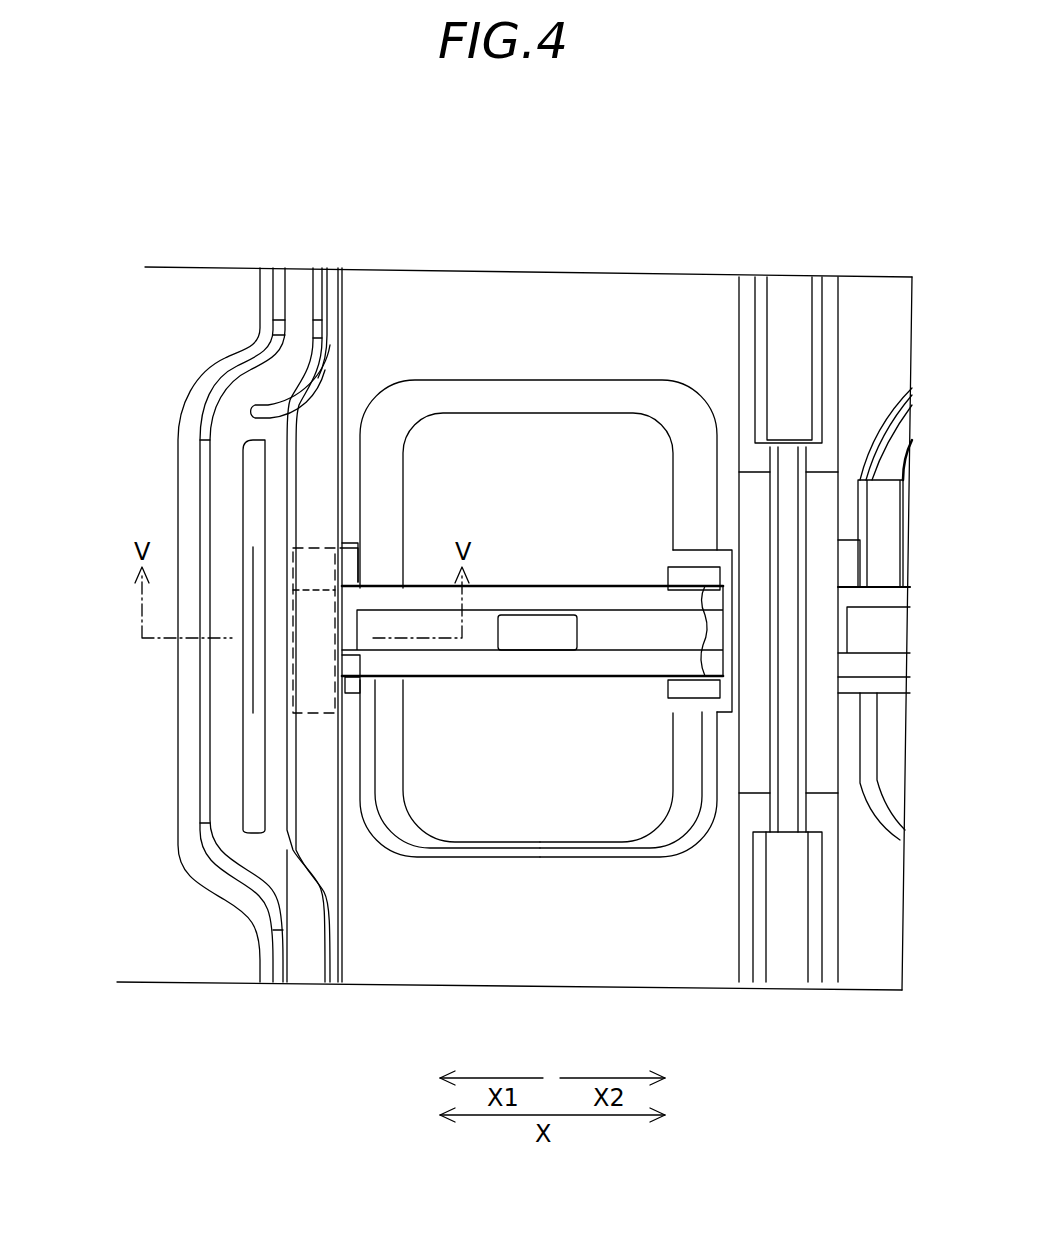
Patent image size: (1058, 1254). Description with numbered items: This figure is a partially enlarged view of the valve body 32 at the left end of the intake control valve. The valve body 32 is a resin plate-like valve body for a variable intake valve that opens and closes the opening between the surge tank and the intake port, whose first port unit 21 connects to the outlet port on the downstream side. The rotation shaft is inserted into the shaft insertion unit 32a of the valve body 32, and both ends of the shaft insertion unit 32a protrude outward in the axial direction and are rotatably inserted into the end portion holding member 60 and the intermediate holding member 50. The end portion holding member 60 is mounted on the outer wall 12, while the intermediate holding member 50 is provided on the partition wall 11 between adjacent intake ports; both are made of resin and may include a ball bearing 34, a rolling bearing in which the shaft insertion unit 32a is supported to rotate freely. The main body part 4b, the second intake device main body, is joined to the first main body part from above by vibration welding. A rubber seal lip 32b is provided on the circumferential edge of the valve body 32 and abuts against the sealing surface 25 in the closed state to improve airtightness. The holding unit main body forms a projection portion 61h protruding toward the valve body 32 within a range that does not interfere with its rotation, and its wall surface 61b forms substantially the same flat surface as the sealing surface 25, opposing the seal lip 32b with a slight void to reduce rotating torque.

The first port unit 21 is at (553, 345).
The sealing surface 25 is at (398, 433).
The valve body 32 is at (538, 854).
The shaft insertion unit 32a is at (650, 642).
The seal lip 32b is at (397, 790).
The outer wall 12 is at (315, 427).
The main body part 4b is at (222, 353).
The wall surface 61b is at (360, 577).
The projection portion 61h is at (353, 667).
The ball bearing 34 is at (297, 677).
The end portion holding member 60 is at (314, 925).
The partition wall 11 is at (790, 343).
The intermediate holding member 50 is at (797, 730).